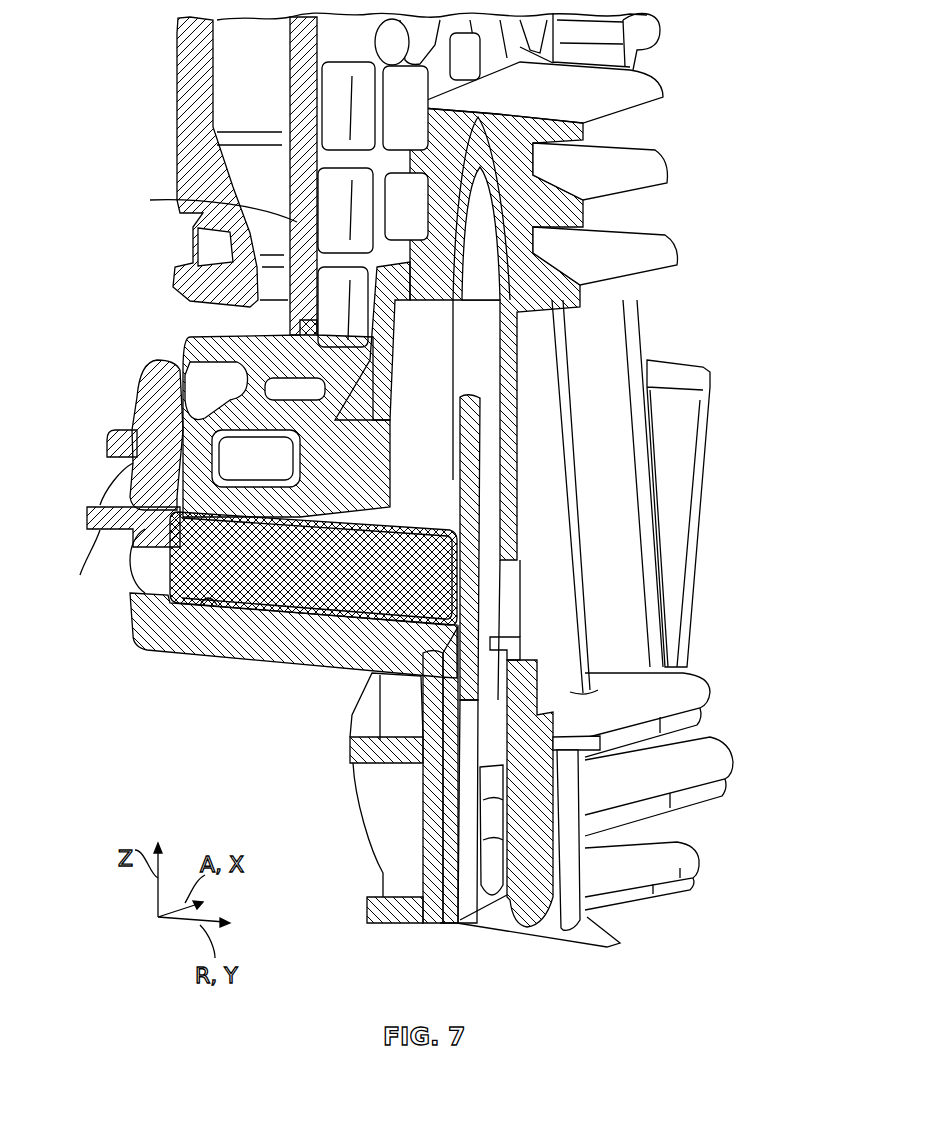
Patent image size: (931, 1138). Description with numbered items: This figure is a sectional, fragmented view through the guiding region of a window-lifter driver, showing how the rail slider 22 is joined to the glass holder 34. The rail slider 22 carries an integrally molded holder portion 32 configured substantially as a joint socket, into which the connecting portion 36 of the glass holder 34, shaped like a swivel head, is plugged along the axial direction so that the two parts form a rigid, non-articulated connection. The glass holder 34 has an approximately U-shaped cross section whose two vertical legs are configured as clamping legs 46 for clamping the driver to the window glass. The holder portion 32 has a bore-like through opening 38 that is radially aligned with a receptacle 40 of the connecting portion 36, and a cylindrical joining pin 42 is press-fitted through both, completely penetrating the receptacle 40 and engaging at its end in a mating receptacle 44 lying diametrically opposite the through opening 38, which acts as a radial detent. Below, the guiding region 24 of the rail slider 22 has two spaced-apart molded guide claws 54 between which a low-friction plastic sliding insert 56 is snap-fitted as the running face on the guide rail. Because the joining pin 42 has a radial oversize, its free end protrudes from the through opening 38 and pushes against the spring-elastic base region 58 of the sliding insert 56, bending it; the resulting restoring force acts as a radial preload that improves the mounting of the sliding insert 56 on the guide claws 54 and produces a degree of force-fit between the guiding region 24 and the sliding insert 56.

The rail slider 22 is at (127, 598).
The guiding region 24 is at (547, 558).
The holder portion 32 is at (147, 402).
The glass holder 34 is at (682, 35).
The connecting portion 36 is at (207, 427).
The through opening 38 is at (440, 625).
The receptacle 40 is at (203, 603).
The joining pin 42 is at (280, 588).
The mating receptacle 44 is at (143, 522).
The clamping legs 46 is at (200, 121).
The guide claws 54 is at (587, 870).
The sliding insert 56 is at (505, 467).
The base region 58 is at (470, 587).